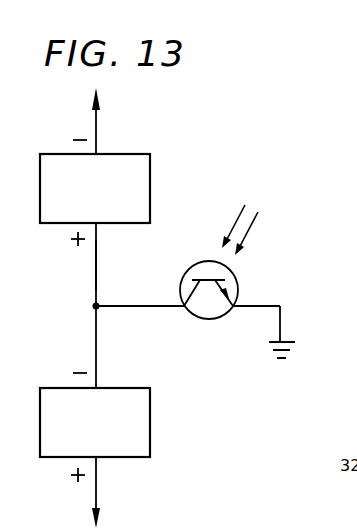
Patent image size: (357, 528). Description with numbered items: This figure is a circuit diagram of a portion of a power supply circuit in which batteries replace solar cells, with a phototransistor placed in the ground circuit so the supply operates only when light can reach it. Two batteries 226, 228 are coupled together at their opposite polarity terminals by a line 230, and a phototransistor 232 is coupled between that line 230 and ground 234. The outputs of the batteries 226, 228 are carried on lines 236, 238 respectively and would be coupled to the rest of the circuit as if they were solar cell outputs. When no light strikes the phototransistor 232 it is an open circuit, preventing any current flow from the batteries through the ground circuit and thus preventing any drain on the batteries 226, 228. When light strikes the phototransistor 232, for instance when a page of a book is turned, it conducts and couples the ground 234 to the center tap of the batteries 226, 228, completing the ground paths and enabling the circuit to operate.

The battery 226 is at (148, 166).
The battery 228 is at (147, 400).
The line 230 is at (95, 270).
The phototransistor 232 is at (197, 318).
The ground 234 is at (283, 338).
The line 236 is at (96, 127).
The line 238 is at (96, 487).